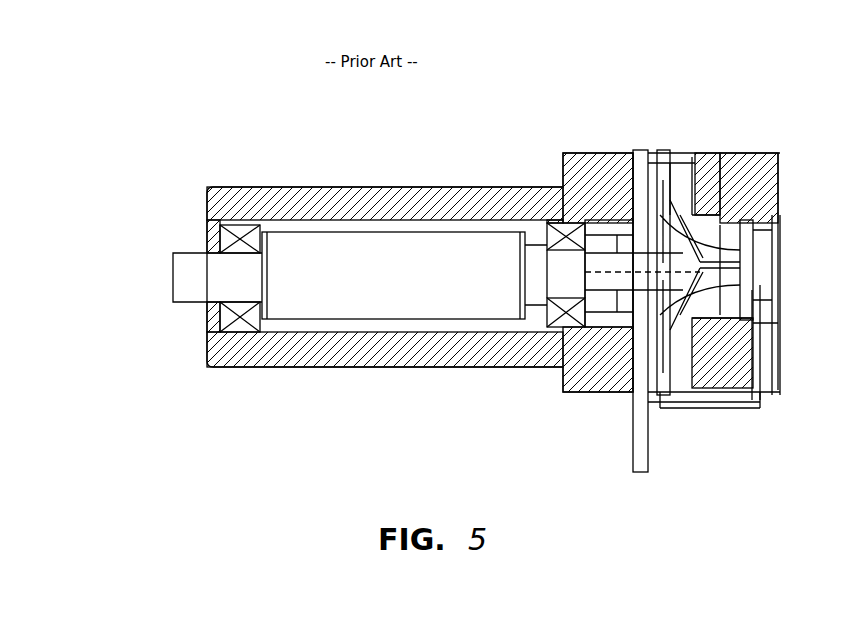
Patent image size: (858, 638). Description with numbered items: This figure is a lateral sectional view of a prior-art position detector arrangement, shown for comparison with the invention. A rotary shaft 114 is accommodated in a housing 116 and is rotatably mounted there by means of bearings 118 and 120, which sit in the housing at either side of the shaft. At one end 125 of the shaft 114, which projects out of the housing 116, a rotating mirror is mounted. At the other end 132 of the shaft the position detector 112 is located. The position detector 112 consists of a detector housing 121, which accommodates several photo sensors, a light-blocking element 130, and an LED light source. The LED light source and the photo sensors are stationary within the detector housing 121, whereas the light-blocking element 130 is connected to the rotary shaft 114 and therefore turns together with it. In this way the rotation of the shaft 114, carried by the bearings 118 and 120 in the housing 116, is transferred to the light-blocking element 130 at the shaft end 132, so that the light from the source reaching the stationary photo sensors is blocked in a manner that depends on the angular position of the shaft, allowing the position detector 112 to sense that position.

The position detector 112 is at (772, 132).
The rotary shaft 114 is at (330, 270).
The housing 116 is at (735, 252).
The bearing 118 is at (292, 147).
The bearing 120 is at (540, 220).
The detector housing 121 is at (718, 405).
The end of shaft 125 is at (192, 282).
The light-blocking element 130 is at (777, 205).
The other end of shaft 132 is at (613, 217).